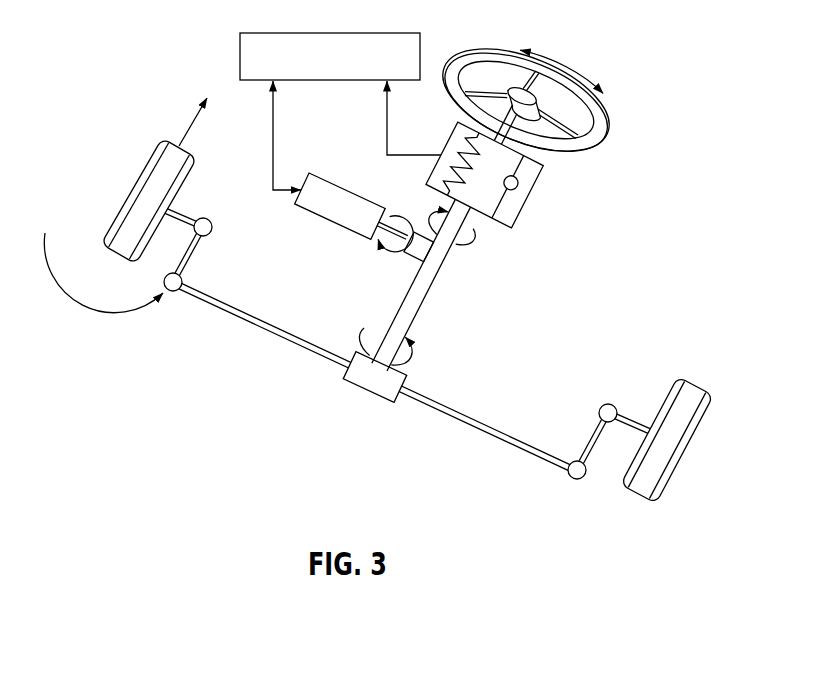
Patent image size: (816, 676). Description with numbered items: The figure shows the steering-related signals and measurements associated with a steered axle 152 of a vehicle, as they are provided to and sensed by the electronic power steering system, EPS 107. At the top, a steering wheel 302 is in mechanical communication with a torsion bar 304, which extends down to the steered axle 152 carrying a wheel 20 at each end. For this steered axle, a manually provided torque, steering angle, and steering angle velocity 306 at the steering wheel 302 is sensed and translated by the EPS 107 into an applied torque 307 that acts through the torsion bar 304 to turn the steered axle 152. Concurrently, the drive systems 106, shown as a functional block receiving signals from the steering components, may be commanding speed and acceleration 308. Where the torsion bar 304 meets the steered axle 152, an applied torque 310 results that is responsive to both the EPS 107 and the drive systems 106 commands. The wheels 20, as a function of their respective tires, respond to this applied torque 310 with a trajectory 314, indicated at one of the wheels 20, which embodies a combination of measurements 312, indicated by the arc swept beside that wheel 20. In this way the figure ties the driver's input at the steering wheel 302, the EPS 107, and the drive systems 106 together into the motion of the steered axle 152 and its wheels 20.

The wheels 20 is at (127, 190).
The drive systems 106 is at (352, 71).
The electronic power steering system 107 is at (530, 197).
The front axle 152 is at (485, 418).
The steering wheel 302 is at (603, 113).
The torsion bar 304 is at (432, 288).
The steering angle velocity 306 is at (575, 72).
The applied torque 307 is at (477, 228).
The speed and acceleration 308 is at (380, 245).
The applied torque 310 is at (422, 360).
The measurements 312 is at (102, 313).
The trajectory 314 is at (190, 124).